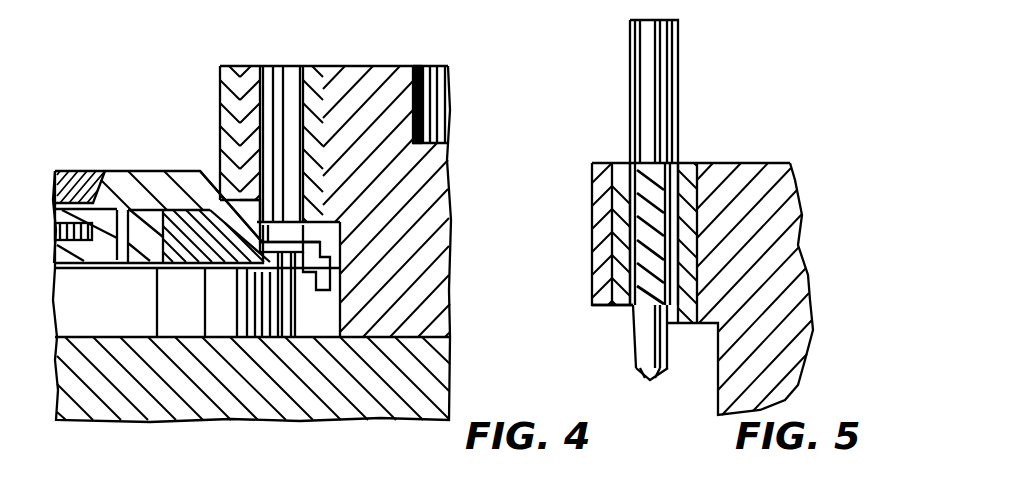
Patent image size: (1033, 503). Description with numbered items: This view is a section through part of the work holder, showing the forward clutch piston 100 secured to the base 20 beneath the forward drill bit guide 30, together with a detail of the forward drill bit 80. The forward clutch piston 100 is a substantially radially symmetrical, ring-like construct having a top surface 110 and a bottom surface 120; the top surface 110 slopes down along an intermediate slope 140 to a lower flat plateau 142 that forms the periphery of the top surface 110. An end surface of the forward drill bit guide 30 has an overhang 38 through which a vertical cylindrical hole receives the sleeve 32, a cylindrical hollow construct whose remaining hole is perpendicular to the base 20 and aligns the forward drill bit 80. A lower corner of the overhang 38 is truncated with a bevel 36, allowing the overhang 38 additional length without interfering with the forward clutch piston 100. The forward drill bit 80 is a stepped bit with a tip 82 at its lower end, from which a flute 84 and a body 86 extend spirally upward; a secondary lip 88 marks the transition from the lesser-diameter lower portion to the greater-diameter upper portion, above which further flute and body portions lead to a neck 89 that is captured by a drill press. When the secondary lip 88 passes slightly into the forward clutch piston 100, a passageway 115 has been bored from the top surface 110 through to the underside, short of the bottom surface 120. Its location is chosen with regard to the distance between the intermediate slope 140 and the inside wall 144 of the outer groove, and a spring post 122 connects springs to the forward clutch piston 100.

In FIG. 4, the base 20 is at (385, 405).
In FIG. 4, the forward drill bit guide 30 is at (400, 80).
In FIG. 5, the forward drill bit guide 30 is at (748, 163).
In FIG. 4, the sleeve 32 is at (316, 66).
In FIG. 5, the sleeve 32 is at (690, 163).
In FIG. 4, the bevel 36 is at (230, 197).
In FIG. 5, the bevel 36 is at (625, 308).
In FIG. 4, the overhang 38 is at (220, 88).
In FIG. 5, the forward drill bit 80 is at (678, 62).
In FIG. 5, the tip 82 is at (668, 375).
In FIG. 5, the flute 84 is at (640, 367).
In FIG. 5, the body 86 is at (636, 340).
In FIG. 5, the secondary lip 88 is at (640, 305).
In FIG. 5, the neck 89 is at (630, 122).
In FIG. 4, the forward clutch piston 100 is at (82, 310).
In FIG. 4, the top surface 110 is at (167, 171).
In FIG. 4, the passageway 115 is at (265, 295).
In FIG. 4, the bottom surface 120 is at (290, 310).
In FIG. 4, the spring post 122 is at (155, 268).
In FIG. 4, the intermediate slope 140 is at (205, 170).
In FIG. 4, the lower flat plateau 142 is at (312, 240).
In FIG. 4, the inside wall 144 is at (332, 275).